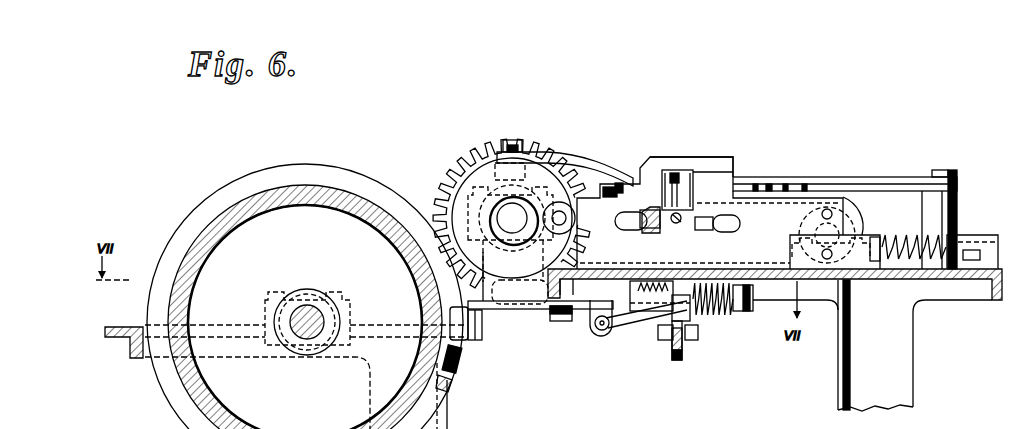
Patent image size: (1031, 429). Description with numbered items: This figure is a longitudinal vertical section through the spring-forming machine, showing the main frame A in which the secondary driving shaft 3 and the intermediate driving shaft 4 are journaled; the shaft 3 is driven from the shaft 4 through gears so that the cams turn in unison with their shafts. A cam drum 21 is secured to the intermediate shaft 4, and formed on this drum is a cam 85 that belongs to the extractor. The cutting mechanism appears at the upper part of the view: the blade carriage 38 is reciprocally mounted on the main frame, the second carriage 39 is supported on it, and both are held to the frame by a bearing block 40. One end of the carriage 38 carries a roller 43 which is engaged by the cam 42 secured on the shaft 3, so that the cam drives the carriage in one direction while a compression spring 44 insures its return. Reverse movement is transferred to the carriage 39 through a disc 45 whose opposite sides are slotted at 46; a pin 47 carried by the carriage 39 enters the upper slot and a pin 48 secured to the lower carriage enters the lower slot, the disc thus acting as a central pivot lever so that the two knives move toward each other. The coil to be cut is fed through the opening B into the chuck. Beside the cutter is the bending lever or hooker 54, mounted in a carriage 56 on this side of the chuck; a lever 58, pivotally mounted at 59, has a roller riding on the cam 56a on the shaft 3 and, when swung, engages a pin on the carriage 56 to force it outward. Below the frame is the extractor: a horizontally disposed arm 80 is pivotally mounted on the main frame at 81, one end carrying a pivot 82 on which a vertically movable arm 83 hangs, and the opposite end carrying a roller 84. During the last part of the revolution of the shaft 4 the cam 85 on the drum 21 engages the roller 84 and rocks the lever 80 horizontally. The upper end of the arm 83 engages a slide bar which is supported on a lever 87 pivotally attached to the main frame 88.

The cam drum 21 is at (330, 187).
The intermediate driving shaft 4 is at (305, 359).
The cam 56a is at (482, 175).
The secondary driving shaft 3 is at (514, 212).
The cam 42 is at (528, 196).
The roller 43 is at (561, 203).
The carriage 38 is at (600, 213).
The bending lever or hooker 54 is at (677, 172).
The bearing block 40 is at (707, 160).
The carriage 56 is at (688, 198).
The opening B is at (676, 222).
The lever 58 is at (763, 180).
The carriage 39 is at (770, 215).
The slot 46 is at (833, 200).
The pin 47 is at (845, 200).
The disc 45 is at (848, 236).
The pivot 59 is at (950, 175).
The compression spring 44 is at (915, 238).
The pin 48 is at (828, 290).
The main frame A is at (916, 369).
The horizontally disposed arm 80 is at (522, 310).
The roller 84 is at (462, 340).
The pivot 81 is at (566, 322).
The pivot 82 is at (603, 333).
The vertically movable arm 83 is at (628, 325).
The cam 85 is at (450, 380).
The main frame 88 is at (705, 312).
The lever 87 is at (683, 351).